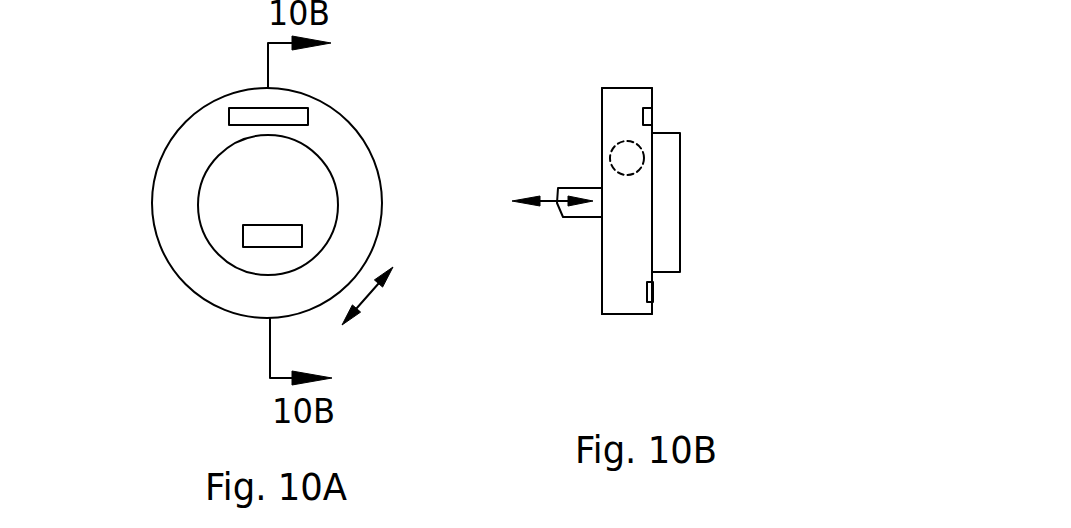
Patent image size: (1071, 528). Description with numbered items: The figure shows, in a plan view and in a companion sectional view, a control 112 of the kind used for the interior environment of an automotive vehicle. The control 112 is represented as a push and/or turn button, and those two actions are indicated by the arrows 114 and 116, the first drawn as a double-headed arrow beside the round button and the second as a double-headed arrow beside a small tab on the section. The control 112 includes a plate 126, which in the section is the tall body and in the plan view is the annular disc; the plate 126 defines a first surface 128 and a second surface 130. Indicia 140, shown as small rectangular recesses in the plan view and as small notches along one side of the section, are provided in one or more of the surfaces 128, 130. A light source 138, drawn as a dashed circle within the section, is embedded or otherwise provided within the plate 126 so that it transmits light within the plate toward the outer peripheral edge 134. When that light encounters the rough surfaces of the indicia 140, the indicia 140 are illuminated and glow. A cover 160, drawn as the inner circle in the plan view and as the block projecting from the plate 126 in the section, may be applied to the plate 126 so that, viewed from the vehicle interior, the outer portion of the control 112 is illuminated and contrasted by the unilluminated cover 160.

In FIG. 10A, the control 112 is at (138, 242).
In FIG. 10B, the control 112 is at (739, 119).
In FIG. 10A, the arrow 114 is at (370, 297).
In FIG. 10B, the arrow 116 is at (558, 205).
In FIG. 10A, the plate 126 is at (245, 296).
In FIG. 10B, the plate 126 is at (623, 305).
In FIG. 10B, the first surface 128 is at (655, 312).
In FIG. 10B, the second surface 130 is at (602, 295).
In FIG. 10A, the outer peripheral edge 134 is at (382, 168).
In FIG. 10B, the outer peripheral edge 134 is at (628, 87).
In FIG. 10B, the light source 138 is at (601, 131).
In FIG. 10A, the indicia 140 is at (293, 115).
In FIG. 10B, the indicia 140 is at (648, 117).
In FIG. 10A, the cover 160 is at (227, 245).
In FIG. 10B, the cover 160 is at (680, 178).